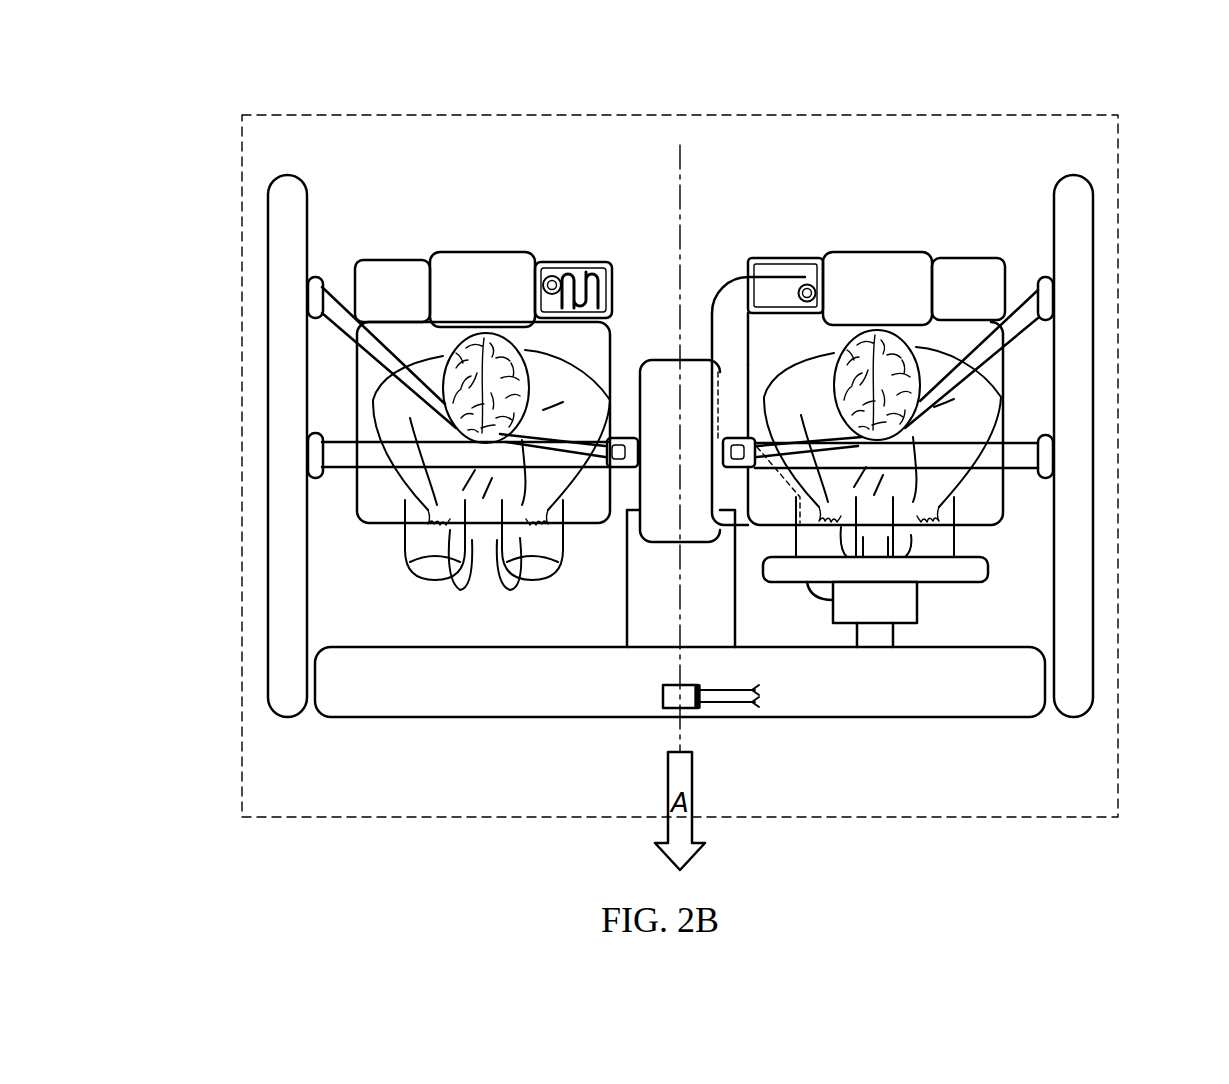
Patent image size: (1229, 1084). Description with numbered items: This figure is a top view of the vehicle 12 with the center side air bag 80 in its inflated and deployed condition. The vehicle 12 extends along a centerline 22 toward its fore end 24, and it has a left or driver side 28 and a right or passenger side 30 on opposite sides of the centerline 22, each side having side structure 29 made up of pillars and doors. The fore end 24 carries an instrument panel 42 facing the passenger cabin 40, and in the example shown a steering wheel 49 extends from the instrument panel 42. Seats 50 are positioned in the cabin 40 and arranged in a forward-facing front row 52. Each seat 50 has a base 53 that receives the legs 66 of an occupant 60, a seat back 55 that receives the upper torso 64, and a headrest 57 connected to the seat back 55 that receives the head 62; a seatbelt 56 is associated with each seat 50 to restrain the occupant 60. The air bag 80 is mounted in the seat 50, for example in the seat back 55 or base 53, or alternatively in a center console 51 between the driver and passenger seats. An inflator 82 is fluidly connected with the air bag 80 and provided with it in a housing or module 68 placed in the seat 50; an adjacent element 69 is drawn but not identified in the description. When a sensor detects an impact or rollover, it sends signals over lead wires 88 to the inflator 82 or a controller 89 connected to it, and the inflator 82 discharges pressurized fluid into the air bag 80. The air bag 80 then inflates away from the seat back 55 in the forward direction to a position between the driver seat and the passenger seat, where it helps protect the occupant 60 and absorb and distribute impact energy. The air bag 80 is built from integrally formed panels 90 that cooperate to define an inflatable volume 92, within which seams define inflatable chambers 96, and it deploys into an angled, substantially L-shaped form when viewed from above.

The vehicle 12 is at (680, 113).
The centerline 22 is at (680, 165).
The first or fore end 24 is at (213, 844).
The left/driver side 28 is at (1146, 195).
The side structure 29 is at (280, 322).
The right/passenger side 30 is at (190, 176).
The passenger compartment or cabin 40 is at (342, 770).
The instrument panel 42 is at (992, 700).
The steering wheel 49 is at (972, 572).
The seat 50 is at (613, 340).
The center console 51 is at (700, 465).
The front row 52 is at (330, 492).
The seat base or bottom 53 is at (363, 433).
The seat back 55 is at (365, 262).
The seatbelt 56 is at (354, 322).
The headrest 57 is at (470, 262).
The occupant 60 is at (430, 378).
The head 62 is at (492, 377).
The upper torso 64 is at (517, 378).
The legs 66 is at (412, 560).
The cover or housing/module 68 is at (576, 258).
The housing 69 is at (610, 258).
The center side air bag 80 is at (613, 298).
The inflator 82 is at (552, 276).
The lead wires 88 is at (727, 688).
The controller 89 is at (697, 710).
The panels 90 is at (710, 327).
The inflatable volume 92 is at (748, 340).
The inflatable chambers 96 is at (773, 470).